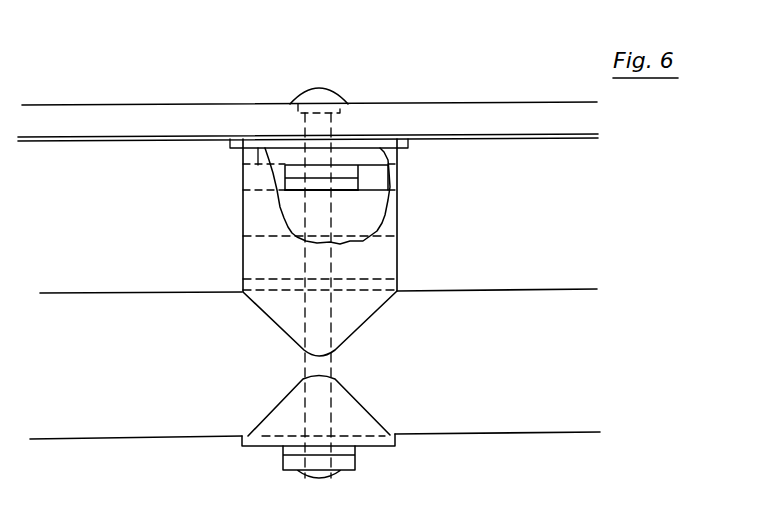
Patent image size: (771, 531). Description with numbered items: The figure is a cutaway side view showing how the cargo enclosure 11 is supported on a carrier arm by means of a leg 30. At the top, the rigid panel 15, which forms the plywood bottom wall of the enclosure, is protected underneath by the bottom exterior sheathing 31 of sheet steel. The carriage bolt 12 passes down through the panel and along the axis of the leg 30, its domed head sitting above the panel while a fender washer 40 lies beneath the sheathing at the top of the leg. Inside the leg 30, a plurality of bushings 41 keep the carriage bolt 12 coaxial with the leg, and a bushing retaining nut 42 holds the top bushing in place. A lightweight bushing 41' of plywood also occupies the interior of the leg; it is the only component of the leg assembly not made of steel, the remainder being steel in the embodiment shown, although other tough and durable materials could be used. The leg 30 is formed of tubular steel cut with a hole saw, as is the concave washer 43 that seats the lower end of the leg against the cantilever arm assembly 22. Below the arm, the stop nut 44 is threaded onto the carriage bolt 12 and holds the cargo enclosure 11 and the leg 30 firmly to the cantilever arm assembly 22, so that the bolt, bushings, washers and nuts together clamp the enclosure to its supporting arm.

The cargo enclosure 11 is at (584, 160).
The carriage bolt 12 is at (337, 90).
The rigid panel 15 is at (173, 107).
The cantilever arm assembly 22 is at (588, 257).
The leg 30 is at (243, 249).
The bottom exterior sheathing 31 is at (82, 143).
The fender washer 40 is at (409, 147).
The bushing 41 is at (320, 215).
The lightweight bushing 41' is at (358, 203).
The bushing retaining nut 42 is at (358, 172).
The concave washer 43 is at (383, 447).
The stop nut 44 is at (283, 464).